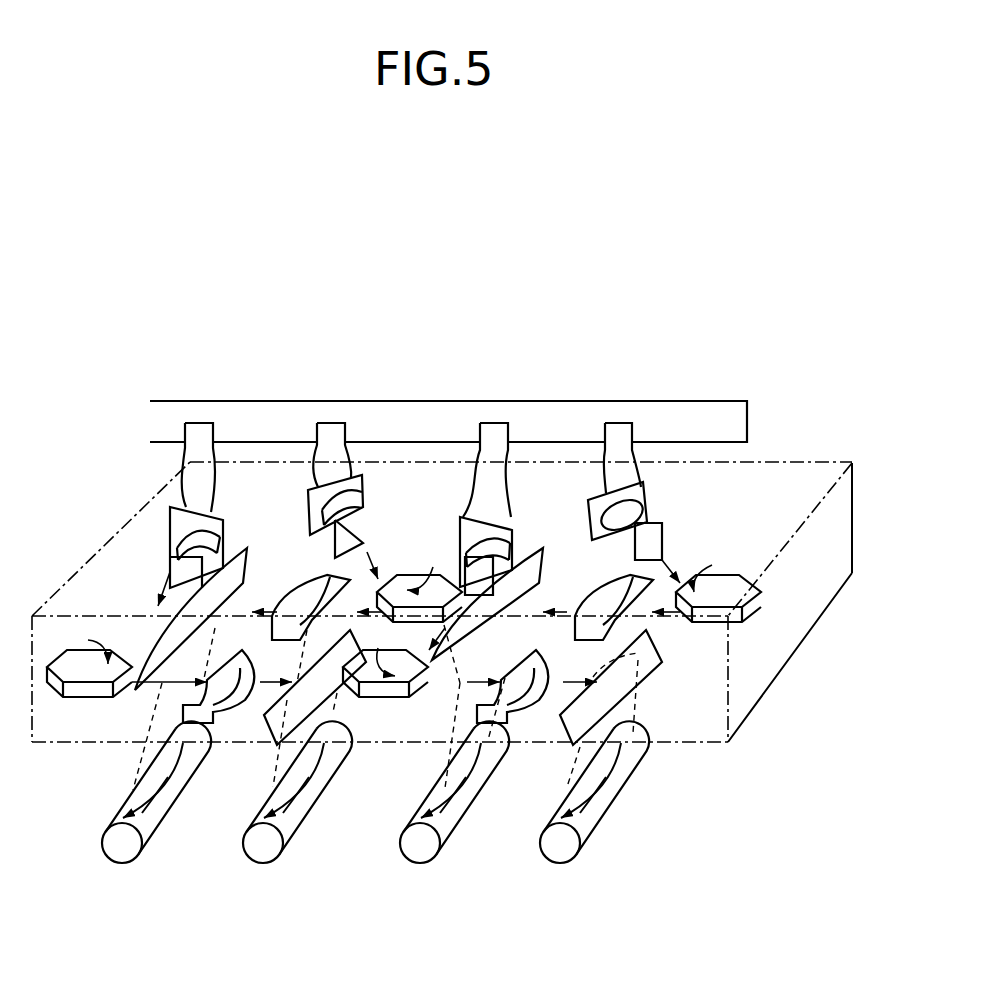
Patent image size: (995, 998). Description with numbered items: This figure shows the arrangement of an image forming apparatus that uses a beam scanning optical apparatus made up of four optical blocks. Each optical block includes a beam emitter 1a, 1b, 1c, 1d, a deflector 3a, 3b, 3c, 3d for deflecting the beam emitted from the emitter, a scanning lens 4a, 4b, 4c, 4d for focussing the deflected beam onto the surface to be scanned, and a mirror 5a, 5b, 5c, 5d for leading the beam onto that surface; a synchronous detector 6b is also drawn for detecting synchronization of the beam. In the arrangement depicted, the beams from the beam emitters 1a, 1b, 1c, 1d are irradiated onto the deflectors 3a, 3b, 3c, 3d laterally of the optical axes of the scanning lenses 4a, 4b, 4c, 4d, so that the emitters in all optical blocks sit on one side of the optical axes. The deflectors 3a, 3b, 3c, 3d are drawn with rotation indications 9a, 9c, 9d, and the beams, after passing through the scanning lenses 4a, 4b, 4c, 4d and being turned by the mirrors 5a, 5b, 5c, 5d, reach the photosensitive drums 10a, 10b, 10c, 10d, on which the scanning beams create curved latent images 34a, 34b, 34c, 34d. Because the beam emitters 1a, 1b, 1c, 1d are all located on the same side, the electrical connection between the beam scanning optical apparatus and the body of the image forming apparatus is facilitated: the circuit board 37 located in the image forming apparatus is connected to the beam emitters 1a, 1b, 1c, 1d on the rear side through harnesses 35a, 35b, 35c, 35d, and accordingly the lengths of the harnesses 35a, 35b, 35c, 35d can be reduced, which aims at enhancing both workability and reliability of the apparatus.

The circuit board 37 is at (625, 408).
The harness 35a is at (195, 428).
The harness 35b is at (332, 433).
The harness 35c is at (623, 433).
The harness 35d is at (497, 433).
The beam emitter 1a is at (210, 525).
The beam emitter 1b is at (367, 540).
The beam emitter 1c is at (530, 557).
The beam emitter 1d is at (485, 523).
The synchronous detector 6b is at (180, 575).
The mirror 5a is at (262, 712).
The mirror 5b is at (240, 550).
The mirror 5c is at (657, 665).
The mirror 5d is at (543, 547).
The scanning lens 4a is at (187, 700).
The scanning lens 4b is at (295, 603).
The scanning lens 4c is at (515, 700).
The scanning lens 4d is at (645, 605).
The deflector 3a is at (63, 658).
The deflector 3b is at (415, 577).
The deflector 3c is at (373, 697).
The deflector 3d is at (758, 597).
The rotation direction 9a is at (150, 692).
The rotation direction 9c is at (487, 695).
The rotation direction 9d is at (408, 583).
The photosensitive drum 10a is at (267, 850).
The photosensitive drum 10b is at (112, 850).
The photosensitive drum 10c is at (560, 850).
The photosensitive drum 10d is at (420, 850).
The curved latent image 34a is at (308, 797).
The curved latent image 34b is at (140, 817).
The curved latent image 34c is at (620, 793).
The curved latent image 34d is at (465, 803).